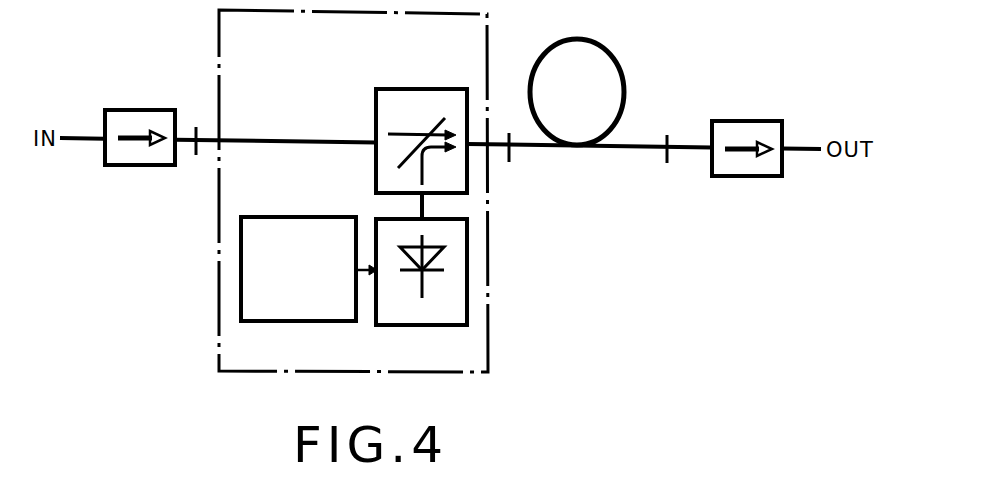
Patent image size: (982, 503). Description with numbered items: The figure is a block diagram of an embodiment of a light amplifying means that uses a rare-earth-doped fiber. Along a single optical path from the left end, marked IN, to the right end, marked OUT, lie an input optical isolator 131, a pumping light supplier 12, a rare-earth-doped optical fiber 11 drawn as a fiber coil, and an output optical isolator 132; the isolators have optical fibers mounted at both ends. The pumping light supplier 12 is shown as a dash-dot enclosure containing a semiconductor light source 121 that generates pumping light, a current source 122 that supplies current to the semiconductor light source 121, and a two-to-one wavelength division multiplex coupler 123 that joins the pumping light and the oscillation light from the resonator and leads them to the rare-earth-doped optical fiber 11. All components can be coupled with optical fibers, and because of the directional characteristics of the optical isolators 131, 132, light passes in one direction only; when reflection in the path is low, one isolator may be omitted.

The rare-earth-doped optical fiber 11 is at (622, 66).
The pumping light supplier 12 is at (255, 48).
The semiconductor light source 121 is at (418, 326).
The current source 122 is at (293, 322).
The two-to-one wavelength division multiplex coupler 123 is at (376, 185).
The optical isolator 131 is at (137, 110).
The optical isolator 132 is at (757, 121).